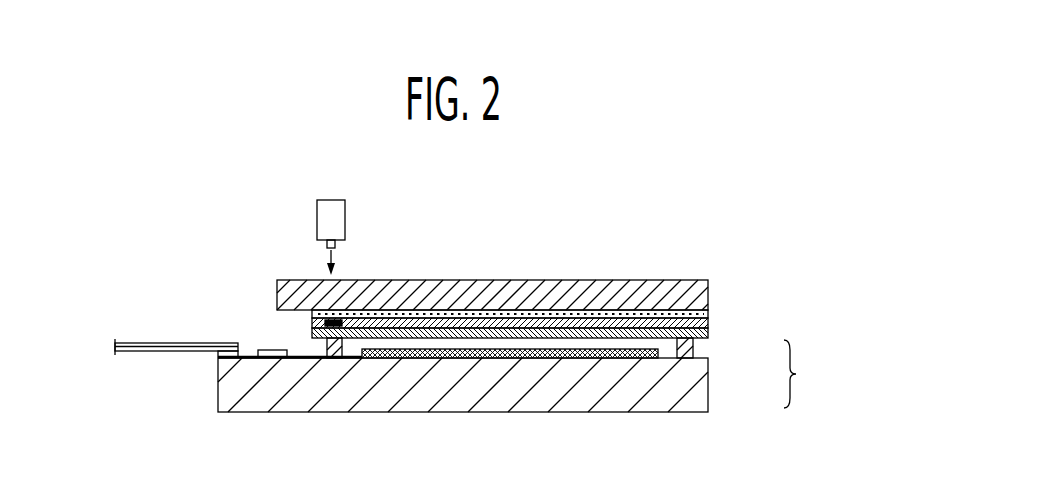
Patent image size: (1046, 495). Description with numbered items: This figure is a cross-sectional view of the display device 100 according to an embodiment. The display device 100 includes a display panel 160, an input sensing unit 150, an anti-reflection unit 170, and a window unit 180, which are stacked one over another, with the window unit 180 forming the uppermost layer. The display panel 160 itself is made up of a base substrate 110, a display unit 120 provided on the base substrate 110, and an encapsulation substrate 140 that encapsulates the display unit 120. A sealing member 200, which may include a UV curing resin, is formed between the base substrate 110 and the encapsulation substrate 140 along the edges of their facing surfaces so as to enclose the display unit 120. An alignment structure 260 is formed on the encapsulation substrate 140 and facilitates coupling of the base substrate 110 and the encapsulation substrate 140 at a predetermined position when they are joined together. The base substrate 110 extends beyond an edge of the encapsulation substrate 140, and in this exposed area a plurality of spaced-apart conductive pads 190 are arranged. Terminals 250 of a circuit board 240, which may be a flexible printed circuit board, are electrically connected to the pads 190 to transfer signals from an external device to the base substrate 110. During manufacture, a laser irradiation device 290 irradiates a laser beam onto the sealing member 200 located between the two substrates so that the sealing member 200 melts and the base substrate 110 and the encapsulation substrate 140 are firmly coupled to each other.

The display device 100 is at (207, 208).
The base substrate 110 is at (708, 388).
The display unit 120 is at (518, 360).
The encapsulation substrate 140 is at (708, 333).
The input sensing unit 150 is at (708, 323).
The display panel 160 is at (807, 374).
The anti-reflection unit 170 is at (708, 314).
The window unit 180 is at (708, 293).
The conductive pads 190 is at (230, 360).
The sealing member 200 is at (335, 345).
The circuit board 240 is at (145, 348).
The terminals 250 is at (220, 355).
The alignment structure 260 is at (337, 322).
The laser irradiation device 290 is at (332, 207).